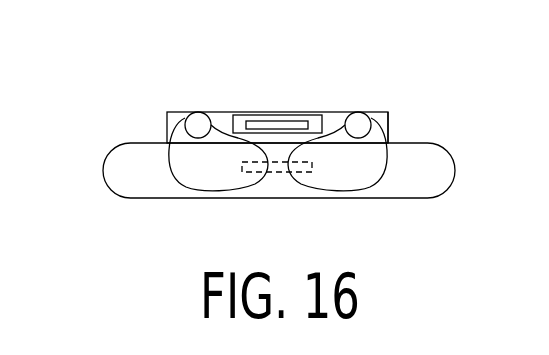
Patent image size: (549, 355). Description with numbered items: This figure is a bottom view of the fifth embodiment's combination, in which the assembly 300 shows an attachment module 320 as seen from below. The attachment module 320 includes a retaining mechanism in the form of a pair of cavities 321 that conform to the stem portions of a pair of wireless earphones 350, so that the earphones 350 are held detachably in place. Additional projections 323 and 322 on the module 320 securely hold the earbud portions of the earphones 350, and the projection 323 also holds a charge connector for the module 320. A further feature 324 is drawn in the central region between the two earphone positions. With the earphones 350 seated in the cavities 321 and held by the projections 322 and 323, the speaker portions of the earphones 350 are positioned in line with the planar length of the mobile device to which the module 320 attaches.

The platform 300 is at (95, 176).
The attachment module 320 is at (376, 112).
The cavities 321 is at (390, 128).
The projection 322 is at (249, 201).
The projection 323 is at (261, 112).
The sensor 324 is at (279, 173).
The wireless earphones 350 is at (343, 190).